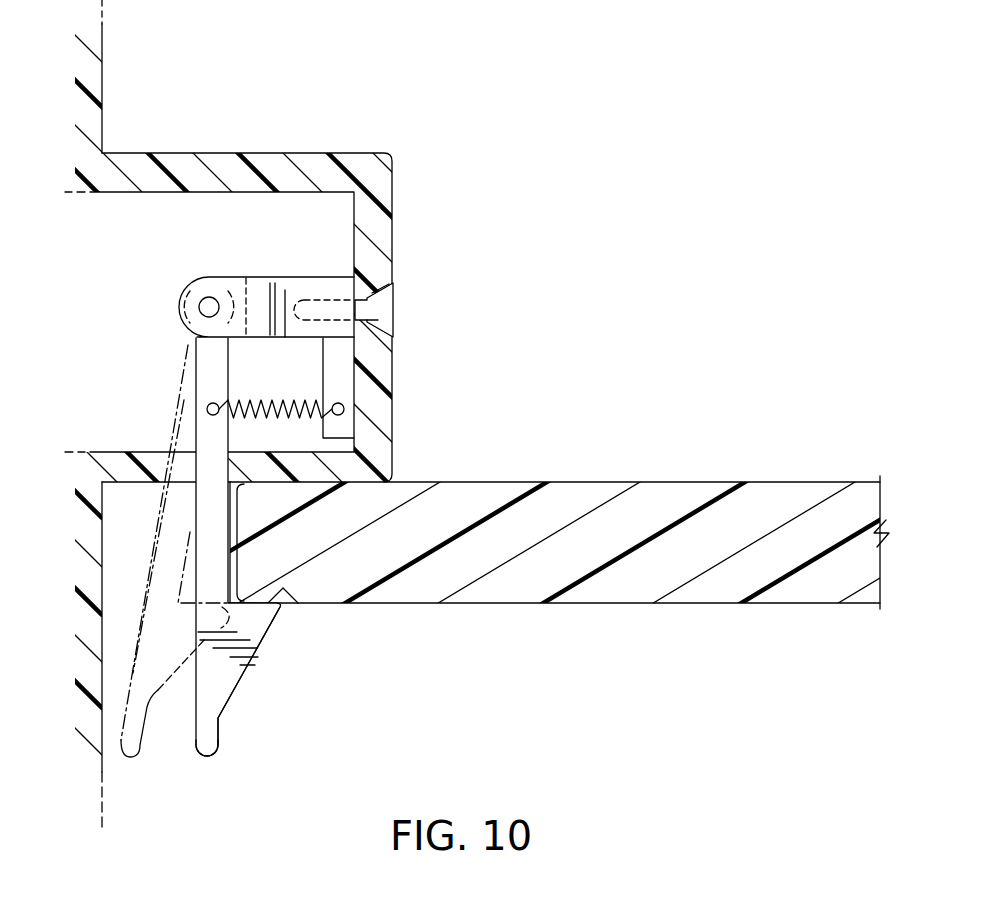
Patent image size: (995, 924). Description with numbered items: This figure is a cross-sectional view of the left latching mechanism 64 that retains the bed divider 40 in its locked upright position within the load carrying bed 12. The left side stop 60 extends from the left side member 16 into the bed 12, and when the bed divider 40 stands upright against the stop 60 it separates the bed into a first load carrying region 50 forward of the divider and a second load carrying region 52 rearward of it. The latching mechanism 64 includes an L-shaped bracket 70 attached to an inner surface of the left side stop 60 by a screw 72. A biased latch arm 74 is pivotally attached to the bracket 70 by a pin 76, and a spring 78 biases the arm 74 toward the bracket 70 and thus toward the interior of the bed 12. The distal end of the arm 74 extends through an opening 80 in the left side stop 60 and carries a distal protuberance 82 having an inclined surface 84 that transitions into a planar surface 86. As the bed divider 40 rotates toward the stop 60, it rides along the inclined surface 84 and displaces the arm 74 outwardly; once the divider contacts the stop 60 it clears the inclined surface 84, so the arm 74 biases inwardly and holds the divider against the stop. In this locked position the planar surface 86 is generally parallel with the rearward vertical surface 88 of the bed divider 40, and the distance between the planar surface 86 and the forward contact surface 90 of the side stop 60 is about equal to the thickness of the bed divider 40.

The load carrying bed 12 is at (154, 121).
The left side member 16 is at (105, 80).
The bed divider 40 is at (545, 560).
The first load carrying region 50 is at (486, 109).
The second load carrying region 52 is at (451, 762).
The left side stop 60 is at (395, 197).
The left latch mechanism 64 is at (205, 756).
The L-shaped bracket 70 is at (286, 288).
The screw 72 is at (383, 300).
The biased latch arm 74 is at (216, 592).
The pin 76 is at (209, 297).
The spring 78 is at (257, 400).
The opening 80 is at (182, 472).
The distal protuberance 82 is at (210, 687).
The inclined surface 84 is at (242, 662).
The planar surface 86 is at (287, 592).
The rearward vertical surface 88 is at (513, 605).
The forward contact surface 90 is at (394, 483).